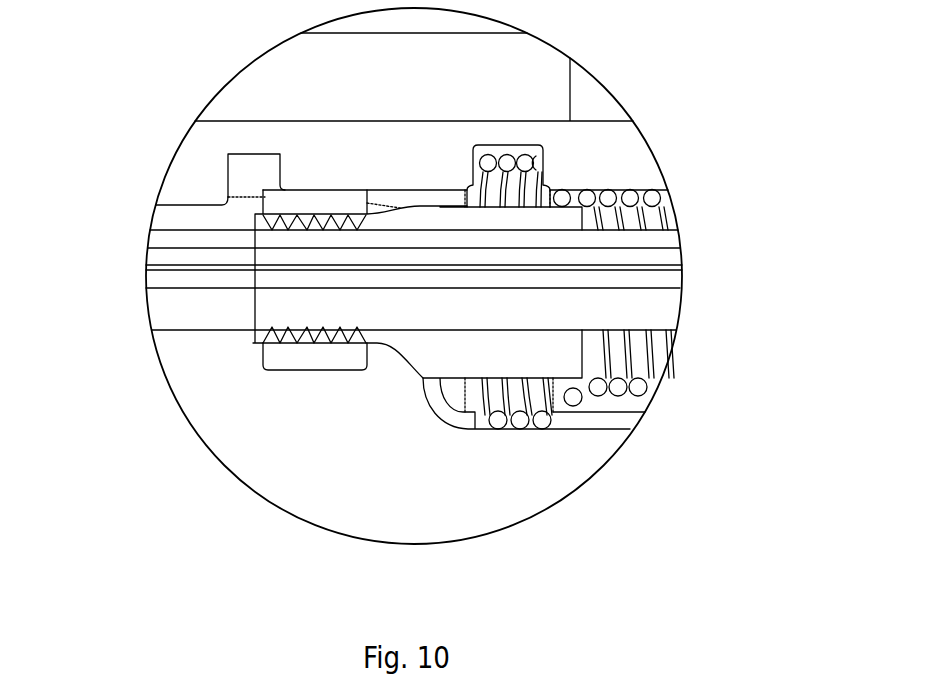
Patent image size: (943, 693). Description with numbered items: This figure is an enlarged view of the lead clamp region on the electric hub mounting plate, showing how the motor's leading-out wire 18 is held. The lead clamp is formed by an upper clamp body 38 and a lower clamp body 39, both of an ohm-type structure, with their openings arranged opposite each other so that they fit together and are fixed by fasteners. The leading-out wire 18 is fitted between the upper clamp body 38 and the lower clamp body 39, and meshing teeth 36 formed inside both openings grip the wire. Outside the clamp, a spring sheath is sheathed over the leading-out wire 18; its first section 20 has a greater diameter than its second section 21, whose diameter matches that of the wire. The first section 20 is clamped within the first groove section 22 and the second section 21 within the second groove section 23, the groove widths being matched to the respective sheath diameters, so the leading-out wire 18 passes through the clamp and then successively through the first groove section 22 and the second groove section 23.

The leading-out wire 18 is at (653, 268).
The first section 20 is at (523, 167).
The second section 21 is at (643, 193).
The first groove section 22 is at (482, 413).
The second groove section 23 is at (623, 405).
The meshing teeth 36 is at (268, 220).
The upper clamp body 38 is at (280, 200).
The lower clamp body 39 is at (300, 355).